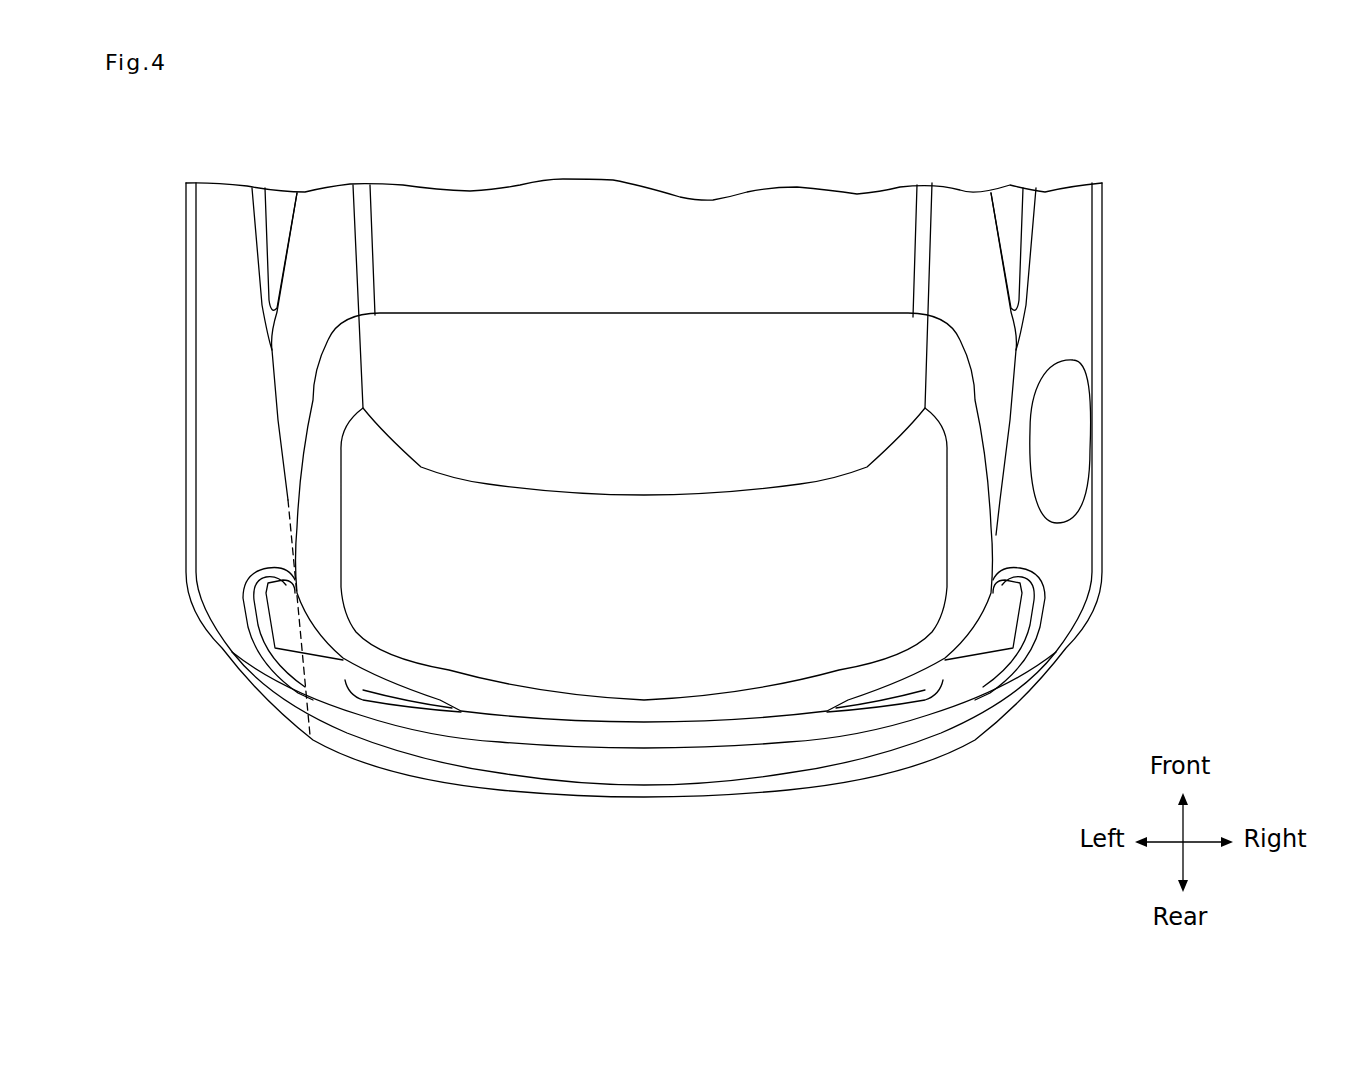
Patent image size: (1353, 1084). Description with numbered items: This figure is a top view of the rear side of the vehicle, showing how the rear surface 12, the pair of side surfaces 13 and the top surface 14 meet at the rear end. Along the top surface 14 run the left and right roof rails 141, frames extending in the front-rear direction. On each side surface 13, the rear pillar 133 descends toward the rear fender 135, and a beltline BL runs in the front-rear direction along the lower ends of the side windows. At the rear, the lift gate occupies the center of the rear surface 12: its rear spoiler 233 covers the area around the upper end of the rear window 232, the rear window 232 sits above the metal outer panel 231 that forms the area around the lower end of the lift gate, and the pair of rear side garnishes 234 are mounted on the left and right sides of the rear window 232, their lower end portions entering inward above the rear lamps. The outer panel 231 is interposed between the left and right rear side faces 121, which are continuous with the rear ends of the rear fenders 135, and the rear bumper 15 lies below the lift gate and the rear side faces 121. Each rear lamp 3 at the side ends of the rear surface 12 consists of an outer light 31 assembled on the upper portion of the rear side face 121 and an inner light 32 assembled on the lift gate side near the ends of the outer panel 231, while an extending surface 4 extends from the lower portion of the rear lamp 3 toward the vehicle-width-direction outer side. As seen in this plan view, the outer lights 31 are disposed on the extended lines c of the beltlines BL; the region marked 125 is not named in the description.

The rear surface 12 is at (652, 858).
The side surface 13 is at (1120, 288).
The top surface 14 is at (644, 163).
The roof rail 141 is at (688, 228).
The rear pillar 133 is at (332, 232).
The beltline BL is at (1017, 370).
The rear fender 135 is at (1105, 415).
The rear spoiler 233 is at (720, 365).
The rear window 232 is at (760, 652).
The outer panel 231 is at (720, 712).
The rear side garnish 234 is at (963, 493).
The front fender 125 is at (1065, 592).
The rear side face 121 is at (225, 610).
The extending surface 4 is at (265, 620).
The rear lamp 3 is at (644, 731).
The outer light 31 is at (980, 658).
The inner light 32 is at (905, 706).
The extended line c is at (300, 658).
The rear bumper 15 is at (548, 796).